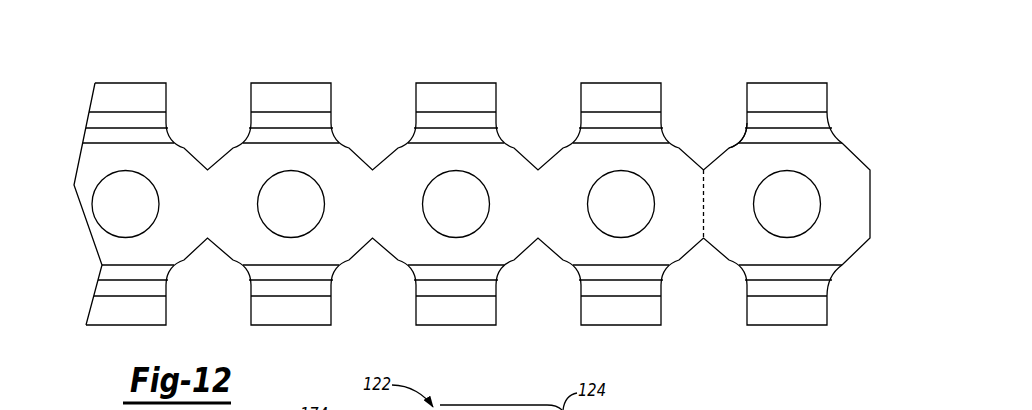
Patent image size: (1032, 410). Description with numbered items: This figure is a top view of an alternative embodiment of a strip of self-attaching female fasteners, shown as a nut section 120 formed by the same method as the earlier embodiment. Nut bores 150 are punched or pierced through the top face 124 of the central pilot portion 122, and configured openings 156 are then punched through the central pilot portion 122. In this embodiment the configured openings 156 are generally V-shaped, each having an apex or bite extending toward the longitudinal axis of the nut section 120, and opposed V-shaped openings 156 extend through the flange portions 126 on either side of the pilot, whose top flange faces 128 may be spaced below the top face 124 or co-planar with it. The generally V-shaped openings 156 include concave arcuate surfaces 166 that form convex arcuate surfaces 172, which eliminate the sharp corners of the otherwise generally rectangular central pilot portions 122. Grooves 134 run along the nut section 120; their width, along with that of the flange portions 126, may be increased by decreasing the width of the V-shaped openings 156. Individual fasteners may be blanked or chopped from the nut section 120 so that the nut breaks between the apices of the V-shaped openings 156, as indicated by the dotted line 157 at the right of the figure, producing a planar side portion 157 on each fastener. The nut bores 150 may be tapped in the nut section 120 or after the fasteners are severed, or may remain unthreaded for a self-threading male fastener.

The nut section 120 is at (84, 94).
The central pilot portion 122 is at (387, 157).
The top face 124 is at (228, 160).
The flange portion 126 is at (810, 110).
The top flange face 128 is at (612, 82).
The groove 134 is at (783, 128).
The nut bore 150 is at (322, 196).
The configured opening 156 is at (537, 115).
The planar portion 157 is at (702, 208).
The concave arcuate surface 166 is at (740, 128).
The convex arcuate surface 172 is at (694, 152).